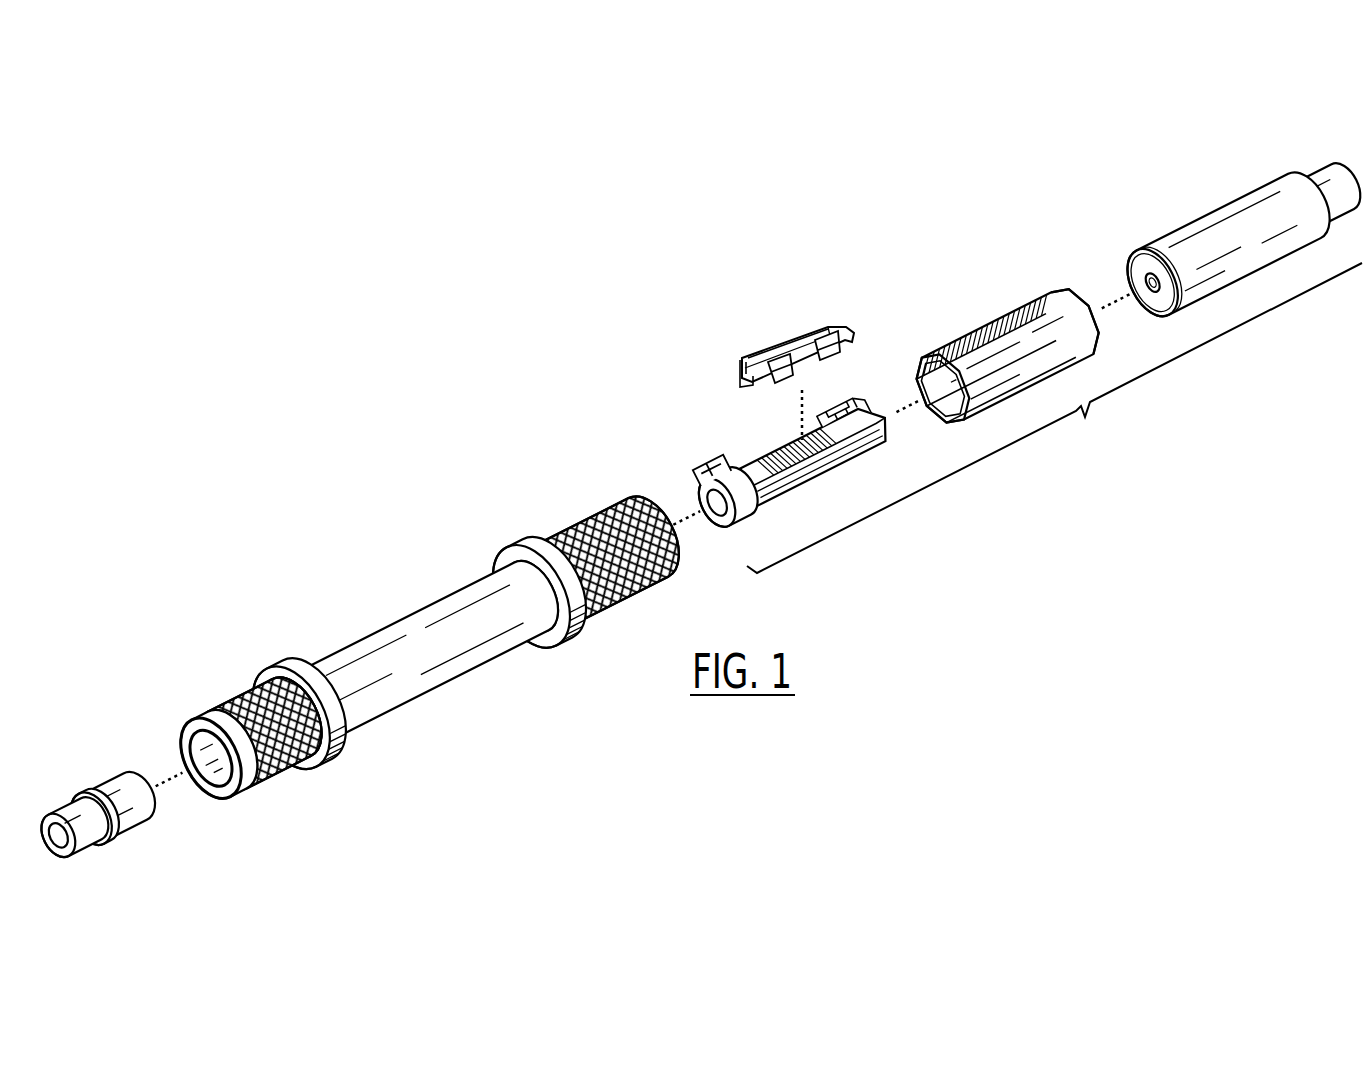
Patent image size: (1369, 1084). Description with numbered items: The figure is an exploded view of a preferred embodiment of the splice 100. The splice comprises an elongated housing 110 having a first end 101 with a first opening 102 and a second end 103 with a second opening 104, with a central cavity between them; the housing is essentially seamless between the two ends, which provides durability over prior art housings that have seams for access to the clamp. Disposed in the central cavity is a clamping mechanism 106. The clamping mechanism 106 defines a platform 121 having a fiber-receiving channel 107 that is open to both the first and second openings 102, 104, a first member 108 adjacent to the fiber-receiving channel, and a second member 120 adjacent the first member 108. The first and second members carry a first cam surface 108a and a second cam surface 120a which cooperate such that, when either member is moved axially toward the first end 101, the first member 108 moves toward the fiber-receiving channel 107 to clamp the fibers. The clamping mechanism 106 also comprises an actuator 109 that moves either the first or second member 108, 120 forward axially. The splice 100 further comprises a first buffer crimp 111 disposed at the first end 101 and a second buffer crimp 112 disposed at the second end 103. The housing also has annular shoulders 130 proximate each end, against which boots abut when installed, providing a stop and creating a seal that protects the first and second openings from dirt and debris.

The splice 100 is at (408, 520).
The first end 101 is at (296, 765).
The first opening 102 is at (208, 774).
The second end 103 is at (630, 506).
The second opening 104 is at (678, 533).
The clamping mechanism 106 is at (1054, 418).
The fiber-receiving channel 107 is at (786, 463).
The first member 108 is at (764, 353).
The first cam surface 108a is at (797, 345).
The actuator 109 is at (1200, 243).
The elongated housing 110 is at (451, 617).
The first buffer crimp 111 is at (115, 842).
The second buffer crimp 112 is at (1343, 178).
The second member 120 is at (1012, 320).
The second cam surface 120a is at (1096, 300).
The platform 121 is at (818, 470).
The annular shoulders 130 is at (285, 667).